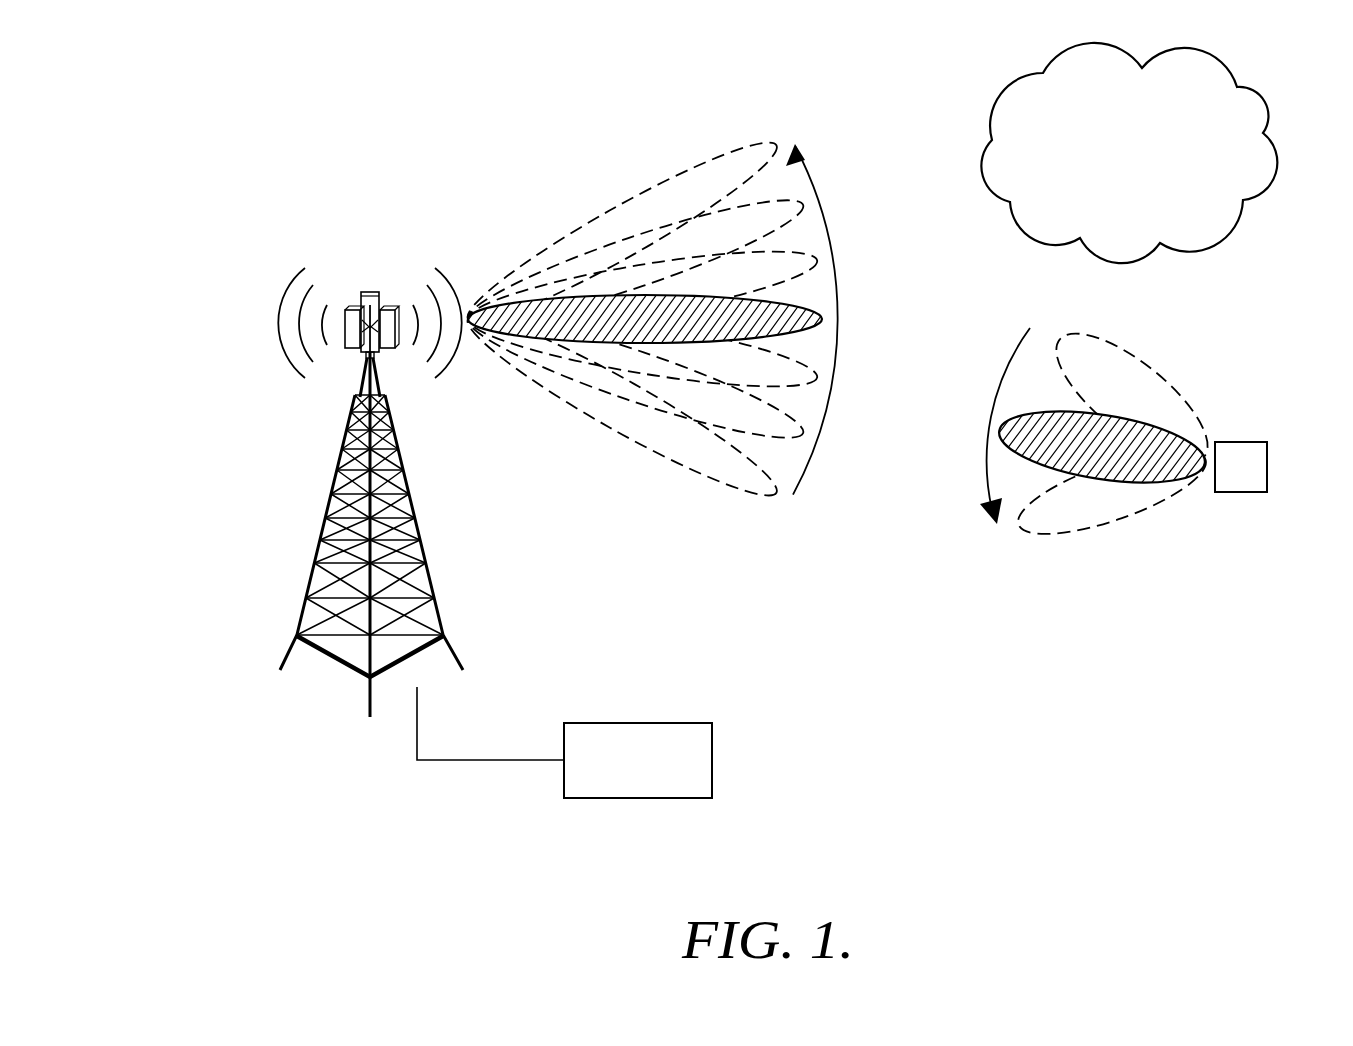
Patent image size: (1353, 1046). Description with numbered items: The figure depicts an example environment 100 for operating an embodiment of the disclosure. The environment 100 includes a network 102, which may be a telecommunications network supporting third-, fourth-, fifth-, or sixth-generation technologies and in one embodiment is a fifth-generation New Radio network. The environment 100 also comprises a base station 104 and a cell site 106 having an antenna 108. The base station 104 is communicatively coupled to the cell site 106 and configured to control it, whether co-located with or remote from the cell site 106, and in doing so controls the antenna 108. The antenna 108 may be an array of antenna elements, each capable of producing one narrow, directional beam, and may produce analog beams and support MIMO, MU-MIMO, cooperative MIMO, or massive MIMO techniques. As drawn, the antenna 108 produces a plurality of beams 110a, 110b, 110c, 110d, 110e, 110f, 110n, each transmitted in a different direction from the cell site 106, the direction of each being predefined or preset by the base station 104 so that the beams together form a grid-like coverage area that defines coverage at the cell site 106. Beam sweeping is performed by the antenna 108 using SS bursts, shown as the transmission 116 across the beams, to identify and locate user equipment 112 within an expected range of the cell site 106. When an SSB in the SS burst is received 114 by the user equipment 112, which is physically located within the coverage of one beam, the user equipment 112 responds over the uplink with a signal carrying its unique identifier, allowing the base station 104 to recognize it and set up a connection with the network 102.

The environment 100 is at (187, 121).
The network 102 is at (1148, 164).
The base station 104 is at (673, 723).
The cell site 106 is at (330, 503).
The antenna 108 is at (368, 292).
The beam 110a is at (622, 231).
The beam 110b is at (635, 261).
The beam 110c is at (642, 290).
The beam 110d is at (702, 328).
The beam 110e is at (642, 348).
The beam 110f is at (635, 375).
The beam 110n is at (622, 405).
The user equipment 112 is at (1267, 462).
The reception of SSB 114 is at (983, 385).
The transmission of SS bursts 116 is at (838, 273).